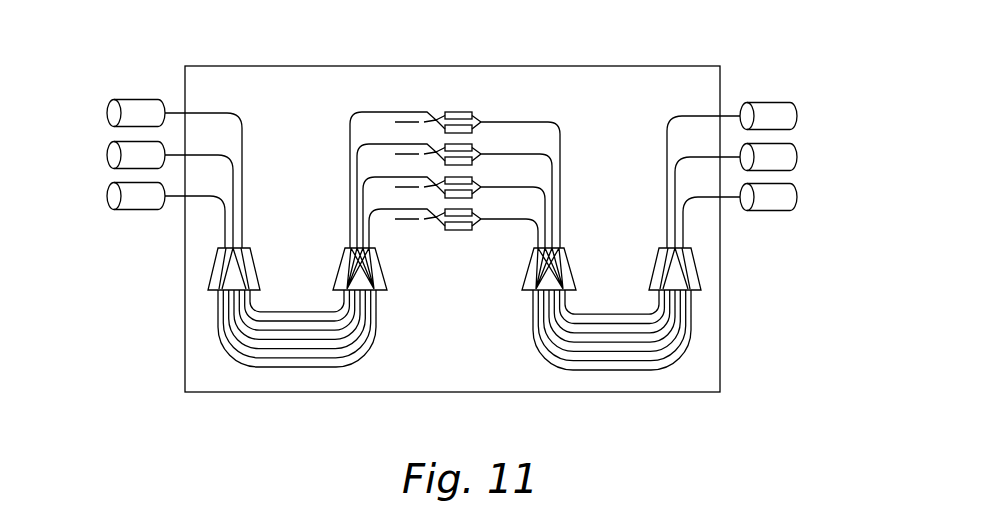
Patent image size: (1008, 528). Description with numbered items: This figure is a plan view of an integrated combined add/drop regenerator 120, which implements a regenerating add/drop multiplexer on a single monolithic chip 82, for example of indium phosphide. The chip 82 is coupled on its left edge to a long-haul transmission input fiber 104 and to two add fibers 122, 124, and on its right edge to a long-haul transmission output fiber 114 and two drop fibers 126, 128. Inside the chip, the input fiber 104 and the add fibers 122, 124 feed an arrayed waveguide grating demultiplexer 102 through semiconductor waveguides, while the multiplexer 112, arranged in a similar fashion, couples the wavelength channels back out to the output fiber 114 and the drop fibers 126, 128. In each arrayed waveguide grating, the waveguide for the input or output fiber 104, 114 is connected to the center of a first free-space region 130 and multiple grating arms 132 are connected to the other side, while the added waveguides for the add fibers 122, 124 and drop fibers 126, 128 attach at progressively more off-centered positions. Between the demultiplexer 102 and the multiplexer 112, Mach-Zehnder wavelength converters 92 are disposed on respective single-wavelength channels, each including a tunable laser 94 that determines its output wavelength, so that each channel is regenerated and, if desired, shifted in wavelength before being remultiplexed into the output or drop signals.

The combined add/drop regenerator 120 is at (226, 45).
The monolithic chip 82 is at (258, 393).
The long-haul transmission input fiber 104 is at (113, 113).
The add fiber 122 is at (113, 155).
The add fiber 124 is at (113, 196).
The long-haul transmission output fiber 114 is at (797, 116).
The drop fiber 126 is at (797, 157).
The drop fiber 128 is at (797, 197).
The first free-space region 130 is at (257, 263).
The grating arms 132 is at (378, 315).
The optical demultiplexer 102 is at (367, 359).
The multiplexer 112 is at (541, 357).
The Mach-Zehnder wavelength converters 92 is at (516, 99).
The tunable lasers 94 is at (398, 110).